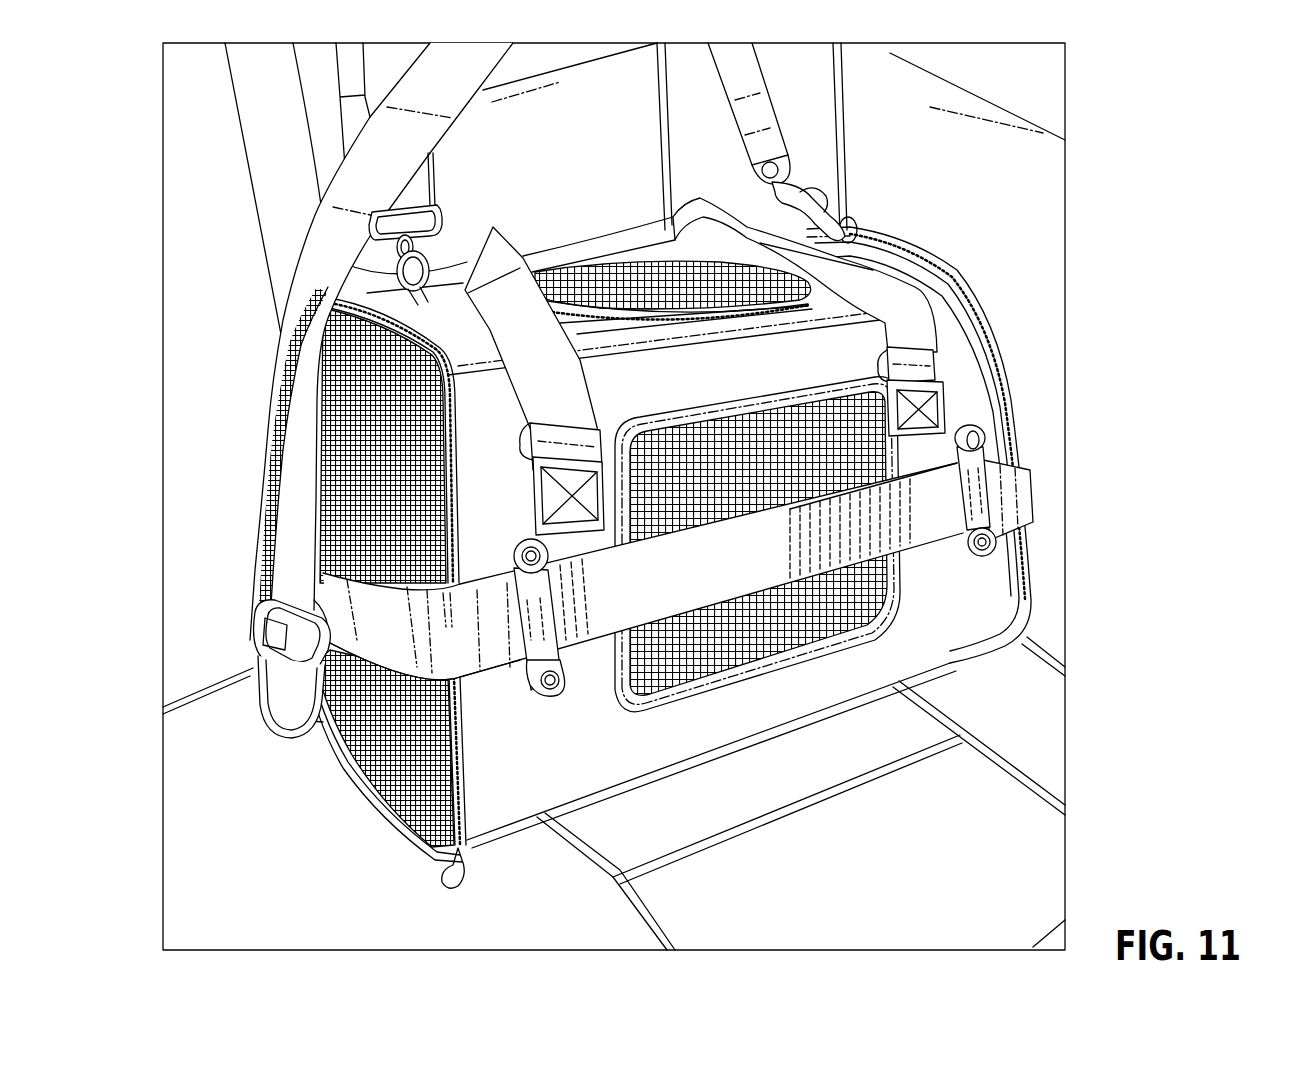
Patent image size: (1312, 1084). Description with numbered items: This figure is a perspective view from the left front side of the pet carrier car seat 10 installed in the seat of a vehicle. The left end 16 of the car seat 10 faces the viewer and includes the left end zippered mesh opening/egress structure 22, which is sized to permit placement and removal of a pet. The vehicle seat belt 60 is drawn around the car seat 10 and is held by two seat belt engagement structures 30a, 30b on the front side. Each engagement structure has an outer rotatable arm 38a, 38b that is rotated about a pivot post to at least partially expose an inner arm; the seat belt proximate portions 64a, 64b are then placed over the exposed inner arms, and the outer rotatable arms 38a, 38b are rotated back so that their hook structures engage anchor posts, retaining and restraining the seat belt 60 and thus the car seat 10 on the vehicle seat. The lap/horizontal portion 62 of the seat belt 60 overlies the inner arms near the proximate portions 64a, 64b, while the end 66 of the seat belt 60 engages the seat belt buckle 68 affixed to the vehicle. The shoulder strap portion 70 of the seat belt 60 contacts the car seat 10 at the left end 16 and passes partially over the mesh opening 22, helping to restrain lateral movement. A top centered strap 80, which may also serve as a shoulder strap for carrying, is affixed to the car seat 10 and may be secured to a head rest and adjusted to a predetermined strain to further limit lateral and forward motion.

The pet carrier car seat 10 is at (567, 200).
The left end 16 is at (351, 341).
The left end zippered mesh opening/egress structure 22 is at (268, 452).
The seat belt engagement structure 30a is at (515, 639).
The seat belt engagement structure 30b is at (935, 494).
The outer rotatable arm 38a is at (520, 585).
The outer rotatable arm 38b is at (1033, 478).
The seat belt 60 is at (393, 633).
The lap/horizontal portion 62 is at (741, 576).
The seat belt proximate portion 64a is at (562, 593).
The seat belt proximate portion 64b is at (955, 502).
The end of seat belt 66 is at (270, 515).
The seat belt buckle 68 is at (262, 660).
The shoulder strap portion 70 is at (316, 393).
The top centered strap 80 is at (430, 175).